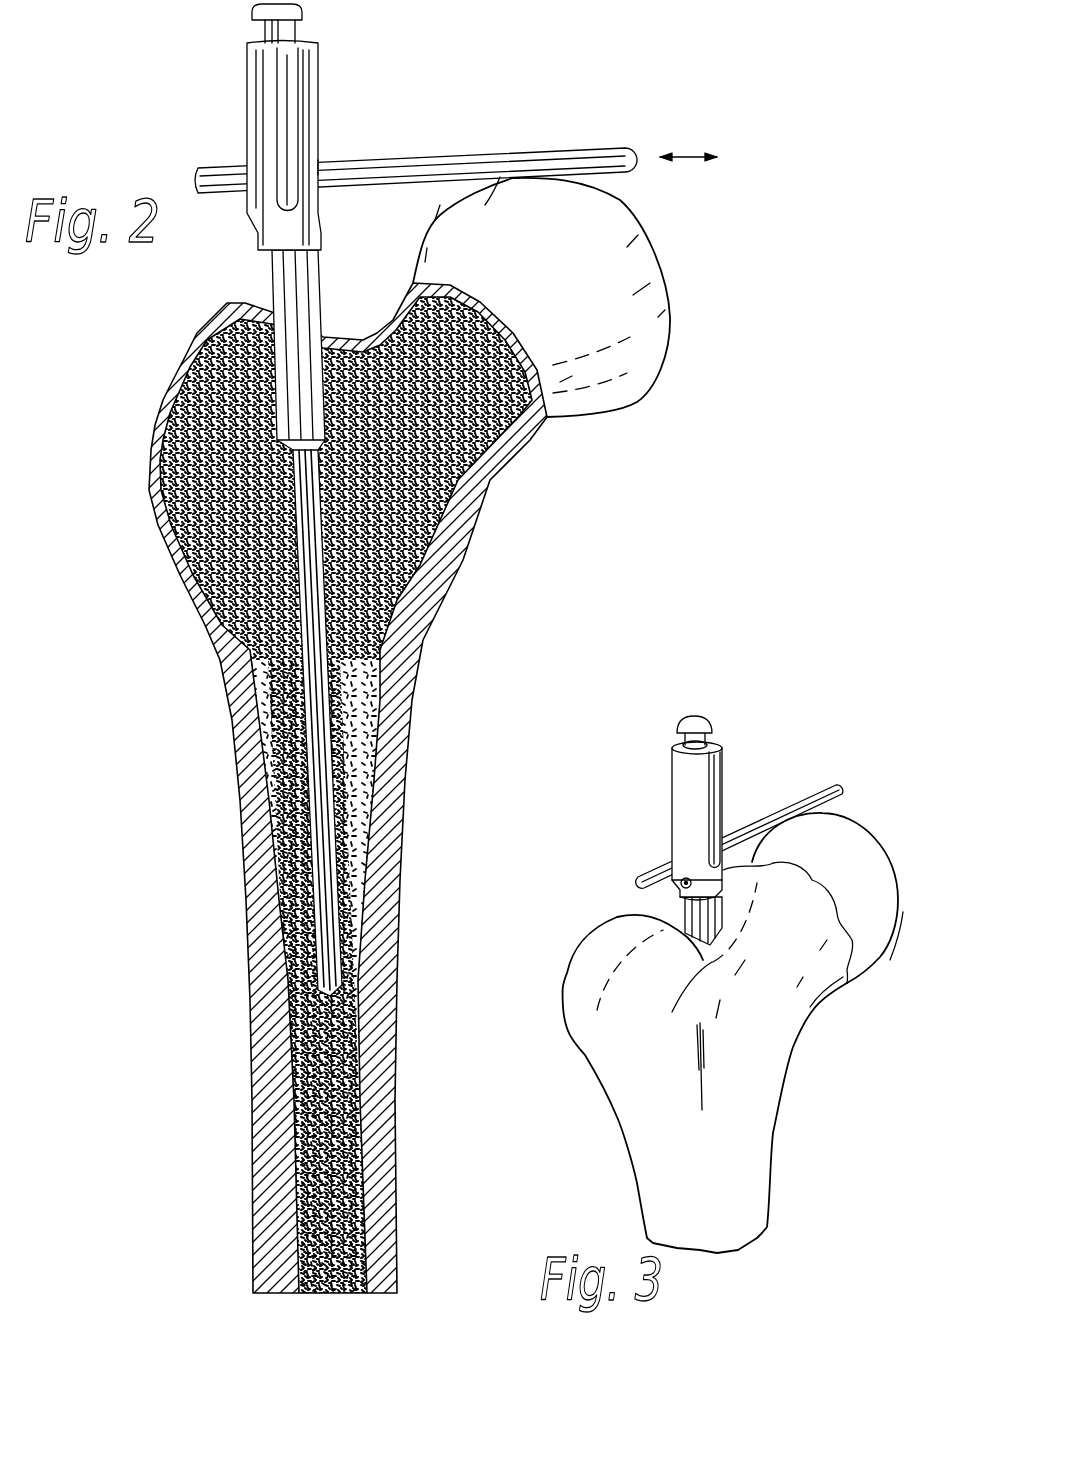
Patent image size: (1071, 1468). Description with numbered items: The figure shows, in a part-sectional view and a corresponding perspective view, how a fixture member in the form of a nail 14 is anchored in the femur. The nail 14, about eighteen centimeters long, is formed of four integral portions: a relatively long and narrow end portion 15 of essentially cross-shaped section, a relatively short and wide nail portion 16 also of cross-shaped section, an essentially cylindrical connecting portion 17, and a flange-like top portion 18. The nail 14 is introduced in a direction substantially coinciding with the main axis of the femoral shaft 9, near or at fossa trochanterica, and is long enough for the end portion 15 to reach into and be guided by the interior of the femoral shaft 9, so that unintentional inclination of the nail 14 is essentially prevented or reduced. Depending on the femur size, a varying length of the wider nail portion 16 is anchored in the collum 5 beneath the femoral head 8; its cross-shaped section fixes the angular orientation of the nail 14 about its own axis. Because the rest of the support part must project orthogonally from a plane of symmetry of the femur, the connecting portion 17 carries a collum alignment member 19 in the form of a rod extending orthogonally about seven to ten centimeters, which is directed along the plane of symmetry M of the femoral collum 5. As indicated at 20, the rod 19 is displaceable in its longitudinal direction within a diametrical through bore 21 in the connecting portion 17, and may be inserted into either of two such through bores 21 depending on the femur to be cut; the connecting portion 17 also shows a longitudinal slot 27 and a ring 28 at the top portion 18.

In FIG. 2, the collum 5 is at (377, 333).
In FIG. 3, the collum 5 is at (773, 1030).
In FIG. 2, the femoral head 8 is at (662, 288).
In FIG. 3, the femoral head 8 is at (827, 906).
In FIG. 2, the femoral shaft 9 is at (392, 1012).
In FIG. 3, the femoral shaft 9 is at (705, 1243).
In FIG. 2, the nail 14 is at (353, 88).
In FIG. 2, the end portion 15 is at (303, 598).
In FIG. 2, the nail portion 16 is at (272, 272).
In FIG. 3, the nail portion 16 is at (715, 915).
In FIG. 2, the connecting portion 17 is at (253, 107).
In FIG. 3, the connecting portion 17 is at (680, 802).
In FIG. 2, the top portion 18 is at (258, 10).
In FIG. 3, the top portion 18 is at (690, 712).
In FIG. 2, the collum alignment member 19 is at (440, 168).
In FIG. 3, the collum alignment member 19 is at (803, 793).
In FIG. 2, the longitudinal displacement of the rod 20 is at (683, 157).
In FIG. 2, the through bore 21 is at (317, 165).
In FIG. 3, the through bore 21 is at (672, 858).
In FIG. 2, the longitudinal slot 27 is at (287, 82).
In FIG. 3, the longitudinal slot 27 is at (715, 770).
In FIG. 3, the collar ring 28 is at (680, 742).
In FIG. 3, the plane of symmetry M is at (775, 850).